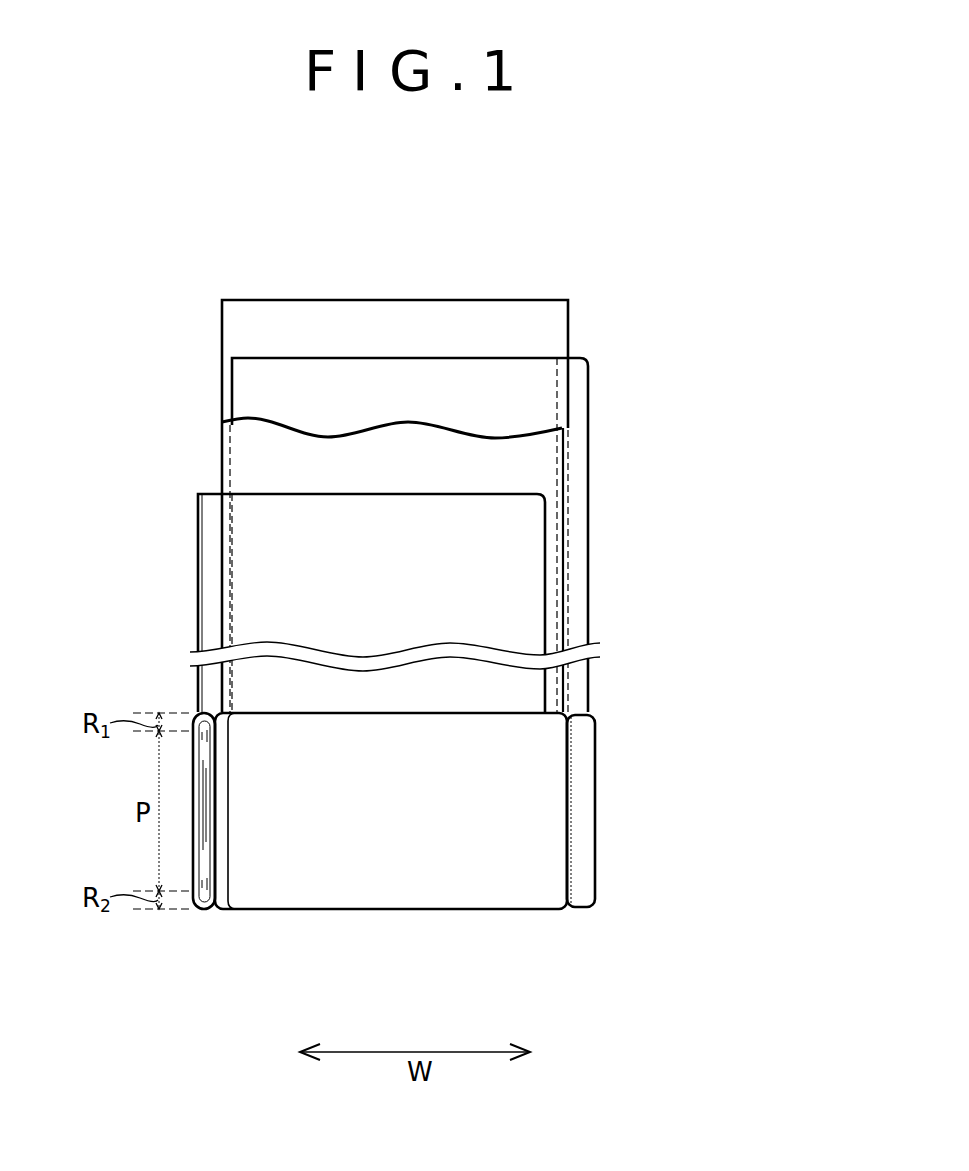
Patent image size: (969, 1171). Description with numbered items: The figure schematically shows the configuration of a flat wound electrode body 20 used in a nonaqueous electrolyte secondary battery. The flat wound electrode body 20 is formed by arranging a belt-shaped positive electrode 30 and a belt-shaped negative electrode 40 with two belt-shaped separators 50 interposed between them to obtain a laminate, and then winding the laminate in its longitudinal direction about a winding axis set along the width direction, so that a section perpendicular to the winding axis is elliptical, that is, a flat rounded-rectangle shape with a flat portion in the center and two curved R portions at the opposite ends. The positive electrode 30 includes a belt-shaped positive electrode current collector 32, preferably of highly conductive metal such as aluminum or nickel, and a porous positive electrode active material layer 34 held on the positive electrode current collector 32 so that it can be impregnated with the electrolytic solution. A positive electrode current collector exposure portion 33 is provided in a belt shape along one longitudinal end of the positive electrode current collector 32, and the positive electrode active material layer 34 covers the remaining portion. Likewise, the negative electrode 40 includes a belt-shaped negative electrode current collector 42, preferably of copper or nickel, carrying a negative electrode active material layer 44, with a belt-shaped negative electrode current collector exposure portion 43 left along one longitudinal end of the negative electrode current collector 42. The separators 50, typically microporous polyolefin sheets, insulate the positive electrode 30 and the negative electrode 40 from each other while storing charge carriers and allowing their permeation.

The flat wound electrode body 20 is at (458, 890).
The positive electrode 30 is at (311, 603).
The positive electrode current collector 32 is at (197, 637).
The positive electrode current collector exposure portion 33 is at (213, 598).
The positive electrode active material layer 34 is at (257, 510).
The negative electrode 40 is at (458, 535).
The negative electrode current collector 42 is at (590, 547).
The negative electrode current collector exposure portion 43 is at (577, 508).
The negative electrode active material layer 44 is at (553, 383).
The separator 50 is at (243, 322).